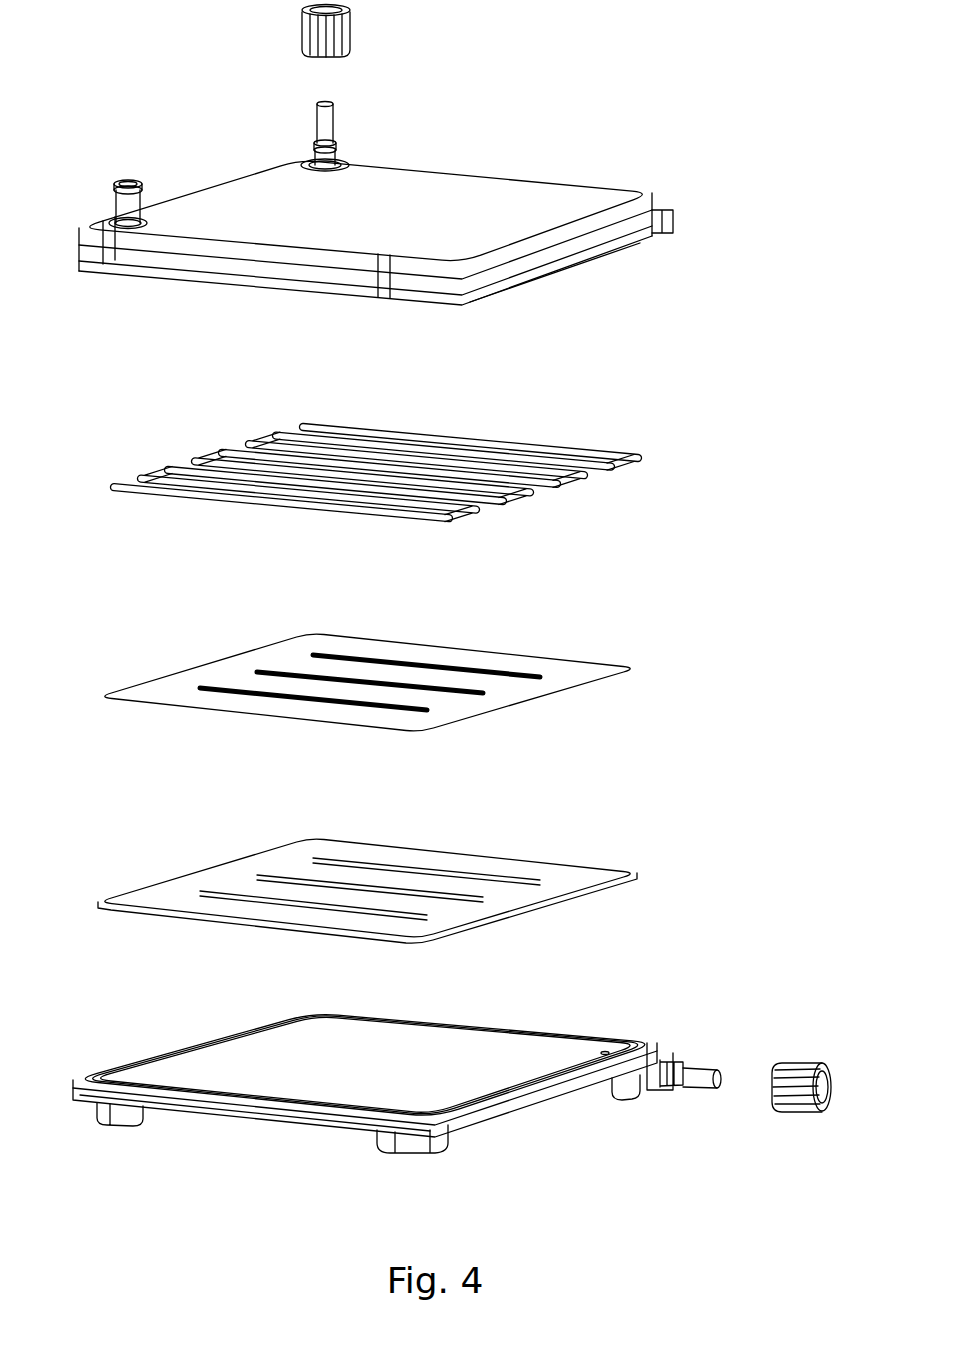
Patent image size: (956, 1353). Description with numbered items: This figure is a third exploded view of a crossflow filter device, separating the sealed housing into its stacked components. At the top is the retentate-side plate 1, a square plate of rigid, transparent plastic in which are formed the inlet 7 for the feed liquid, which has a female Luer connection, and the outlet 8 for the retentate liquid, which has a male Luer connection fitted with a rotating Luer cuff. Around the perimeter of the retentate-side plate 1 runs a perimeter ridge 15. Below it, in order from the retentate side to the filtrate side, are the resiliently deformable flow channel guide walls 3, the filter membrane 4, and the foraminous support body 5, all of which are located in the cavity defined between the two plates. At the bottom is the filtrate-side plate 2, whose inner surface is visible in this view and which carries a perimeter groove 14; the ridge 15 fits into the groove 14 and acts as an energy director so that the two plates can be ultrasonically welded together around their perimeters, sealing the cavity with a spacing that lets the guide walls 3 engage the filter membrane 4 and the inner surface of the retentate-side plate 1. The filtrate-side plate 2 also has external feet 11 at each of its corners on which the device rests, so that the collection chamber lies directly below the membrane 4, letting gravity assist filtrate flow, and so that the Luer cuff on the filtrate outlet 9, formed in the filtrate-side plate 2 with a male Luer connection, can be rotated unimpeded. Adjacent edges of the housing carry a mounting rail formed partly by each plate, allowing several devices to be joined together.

The retentate-side plate 1 is at (353, 213).
The filtrate-side plate 2 is at (397, 1099).
The flow channel guide walls 3 is at (623, 450).
The filter membrane 4 is at (637, 668).
The foraminous support body 5 is at (637, 873).
The inlet 7 is at (115, 182).
The outlet 8 is at (310, 133).
The outlet 9 is at (683, 1085).
The external feet 11 is at (385, 1153).
The perimeter groove 14 is at (170, 1050).
The perimeter ridge 15 is at (572, 268).